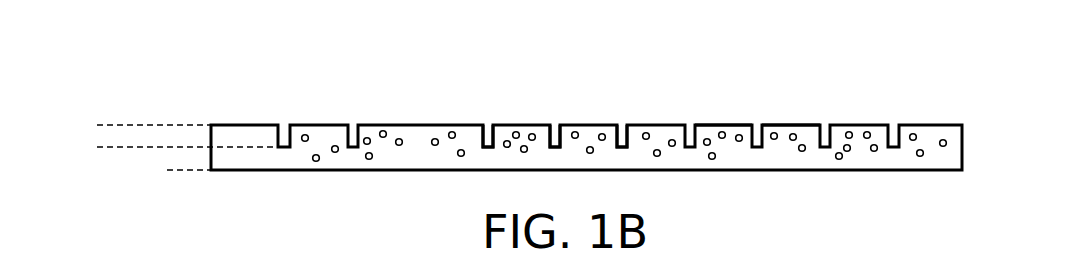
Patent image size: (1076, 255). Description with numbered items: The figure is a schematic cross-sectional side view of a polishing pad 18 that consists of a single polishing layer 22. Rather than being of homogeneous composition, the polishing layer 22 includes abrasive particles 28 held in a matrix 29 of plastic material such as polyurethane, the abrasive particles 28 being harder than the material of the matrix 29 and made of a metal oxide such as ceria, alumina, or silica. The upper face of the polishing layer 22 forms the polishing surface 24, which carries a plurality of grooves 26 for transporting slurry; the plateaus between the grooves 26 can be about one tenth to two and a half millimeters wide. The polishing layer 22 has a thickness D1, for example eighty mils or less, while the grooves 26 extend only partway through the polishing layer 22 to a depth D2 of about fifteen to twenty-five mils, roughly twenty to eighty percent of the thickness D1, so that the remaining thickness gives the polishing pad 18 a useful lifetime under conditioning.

The polishing pad 18 is at (992, 86).
The polishing layer 22 is at (963, 142).
The polishing surface 24 is at (798, 125).
The grooves 26 is at (619, 124).
The abrasive particles 28 is at (672, 140).
The matrix 29 is at (733, 128).
The thickness D1 is at (172, 213).
The depth D2 is at (97, 190).